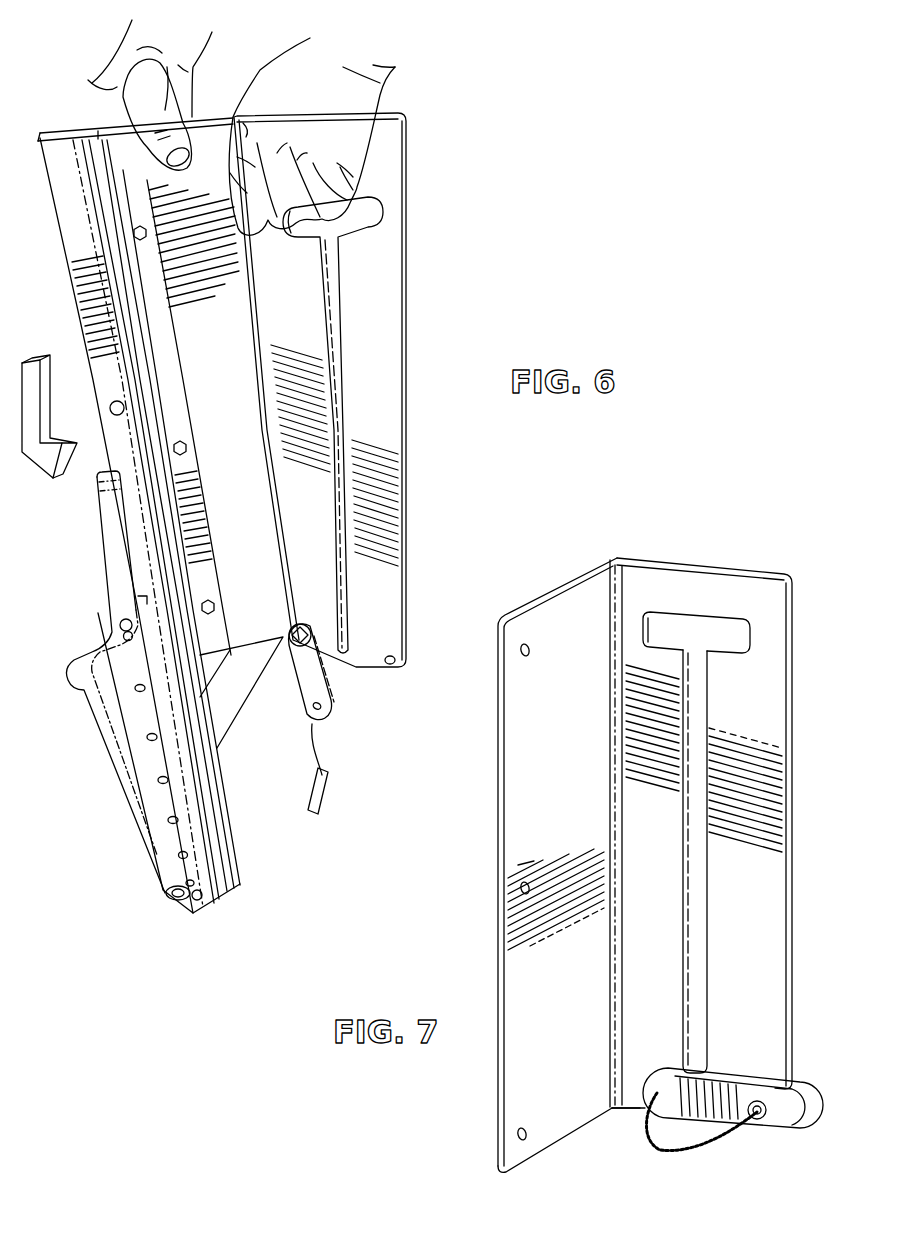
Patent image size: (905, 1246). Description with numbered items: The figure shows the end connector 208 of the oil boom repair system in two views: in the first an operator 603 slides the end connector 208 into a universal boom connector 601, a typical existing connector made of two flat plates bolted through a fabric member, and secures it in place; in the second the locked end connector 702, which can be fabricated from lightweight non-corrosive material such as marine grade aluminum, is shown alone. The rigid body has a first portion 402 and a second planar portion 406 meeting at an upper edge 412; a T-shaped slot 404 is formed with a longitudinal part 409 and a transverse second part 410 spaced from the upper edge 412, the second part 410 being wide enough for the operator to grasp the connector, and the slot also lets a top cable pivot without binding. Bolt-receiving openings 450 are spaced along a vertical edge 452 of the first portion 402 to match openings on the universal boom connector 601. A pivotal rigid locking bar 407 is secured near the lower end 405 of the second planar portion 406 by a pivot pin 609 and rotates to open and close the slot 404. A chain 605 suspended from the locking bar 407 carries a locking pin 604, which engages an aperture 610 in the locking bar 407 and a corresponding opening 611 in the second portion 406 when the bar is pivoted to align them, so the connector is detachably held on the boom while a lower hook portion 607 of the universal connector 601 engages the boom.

In FIG. 6, the end connector 208 is at (405, 482).
In FIG. 7, the end connector 208 is at (750, 572).
In FIG. 7, the first portion 402 is at (518, 842).
In FIG. 6, the T-shaped slot 404 is at (345, 378).
In FIG. 7, the T-shaped slot 404 is at (703, 888).
In FIG. 7, the bottom edge of panel 405 is at (612, 1108).
In FIG. 6, the second planar portion 406 is at (390, 302).
In FIG. 7, the second planar portion 406 is at (760, 800).
In FIG. 6, the locking bar 407 is at (307, 672).
In FIG. 7, the locking bar 407 is at (790, 1112).
In FIG. 7, the longitudinal part 409 is at (705, 921).
In FIG. 7, the second part of the slot 410 is at (745, 638).
In FIG. 7, the upper edge 412 is at (618, 556).
In FIG. 7, the bolt-receiving openings 450 is at (520, 648).
In FIG. 7, the vertical edge 452 is at (500, 795).
In FIG. 6, the universal boom connector 601 is at (177, 832).
In FIG. 6, the operator 603 is at (110, 90).
In FIG. 6, the locking pin 604 is at (323, 800).
In FIG. 7, the locking pin 604 is at (757, 1120).
In FIG. 6, the chain 605 is at (312, 757).
In FIG. 7, the chain 605 is at (660, 1150).
In FIG. 6, the hook bracket 607 is at (108, 768).
In FIG. 6, the pivot pin 609 is at (302, 622).
In FIG. 6, the aperture 610 is at (320, 715).
In FIG. 6, the opening 611 is at (394, 666).
In FIG. 7, the end connector 702 is at (670, 508).